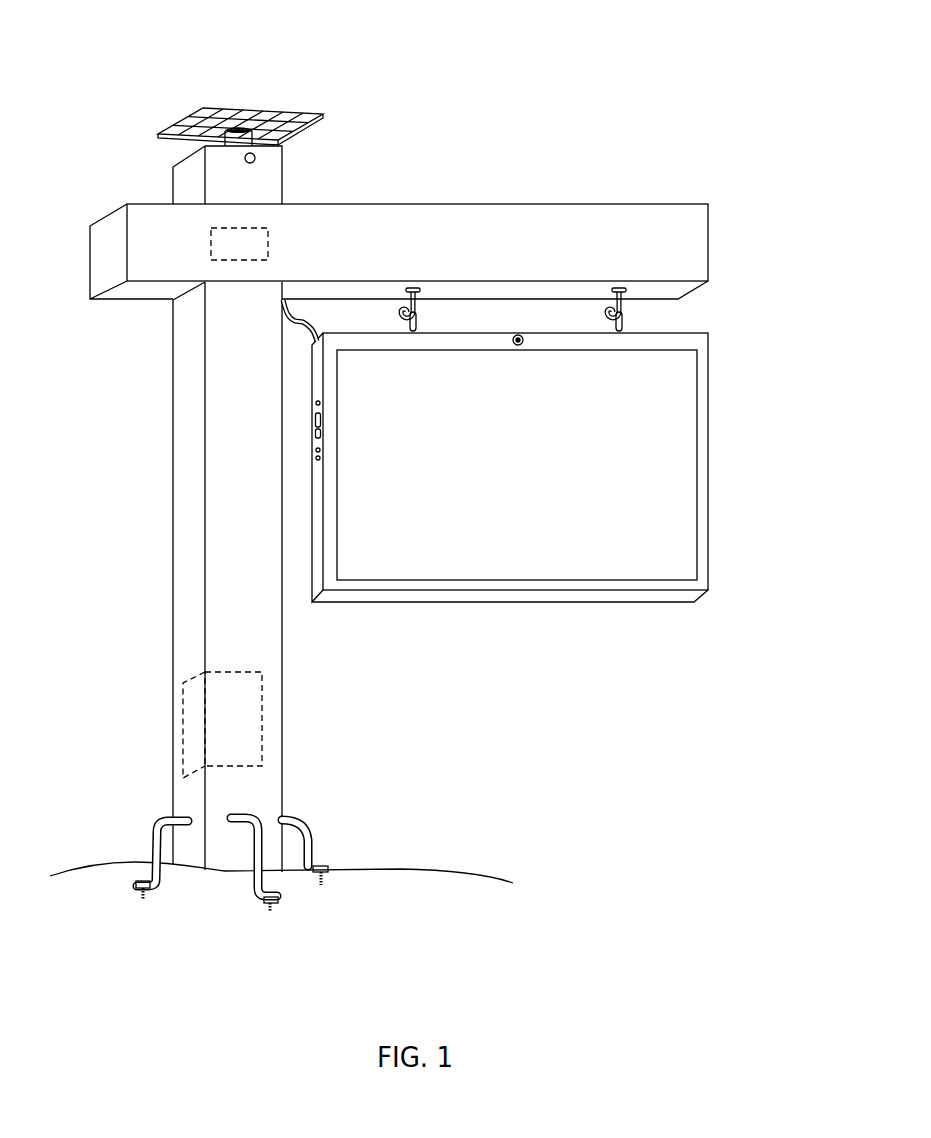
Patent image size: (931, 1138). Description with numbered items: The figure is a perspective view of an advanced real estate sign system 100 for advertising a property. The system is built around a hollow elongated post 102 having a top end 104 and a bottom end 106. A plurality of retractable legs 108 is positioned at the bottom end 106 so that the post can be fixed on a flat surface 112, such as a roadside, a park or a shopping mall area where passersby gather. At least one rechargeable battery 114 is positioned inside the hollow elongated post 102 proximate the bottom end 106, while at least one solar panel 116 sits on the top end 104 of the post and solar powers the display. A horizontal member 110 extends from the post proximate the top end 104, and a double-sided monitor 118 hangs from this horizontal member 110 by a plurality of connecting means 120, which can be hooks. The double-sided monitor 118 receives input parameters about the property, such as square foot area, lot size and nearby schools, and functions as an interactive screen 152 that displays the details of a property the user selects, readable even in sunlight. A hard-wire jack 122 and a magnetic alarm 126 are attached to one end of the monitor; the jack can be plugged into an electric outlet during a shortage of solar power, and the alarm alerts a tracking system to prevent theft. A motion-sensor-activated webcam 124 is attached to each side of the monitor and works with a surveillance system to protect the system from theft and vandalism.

The advanced real estate sign system 100 is at (527, 58).
The hollow elongated post 102 is at (181, 422).
The top end 104 is at (183, 183).
The bottom end 106 is at (262, 790).
The retractable legs 108 is at (312, 843).
The horizontal member 110 is at (697, 203).
The flat surface 112 is at (448, 872).
The rechargeable battery 114 is at (218, 682).
The solar panel 116 is at (218, 107).
The double-sided monitor 118 is at (708, 408).
The connecting means 120 is at (632, 312).
The hard-wire jack 122 is at (318, 433).
The webcam 124 is at (522, 337).
The magnetic alarm 126 is at (315, 332).
The interactive screen 152 is at (672, 513).